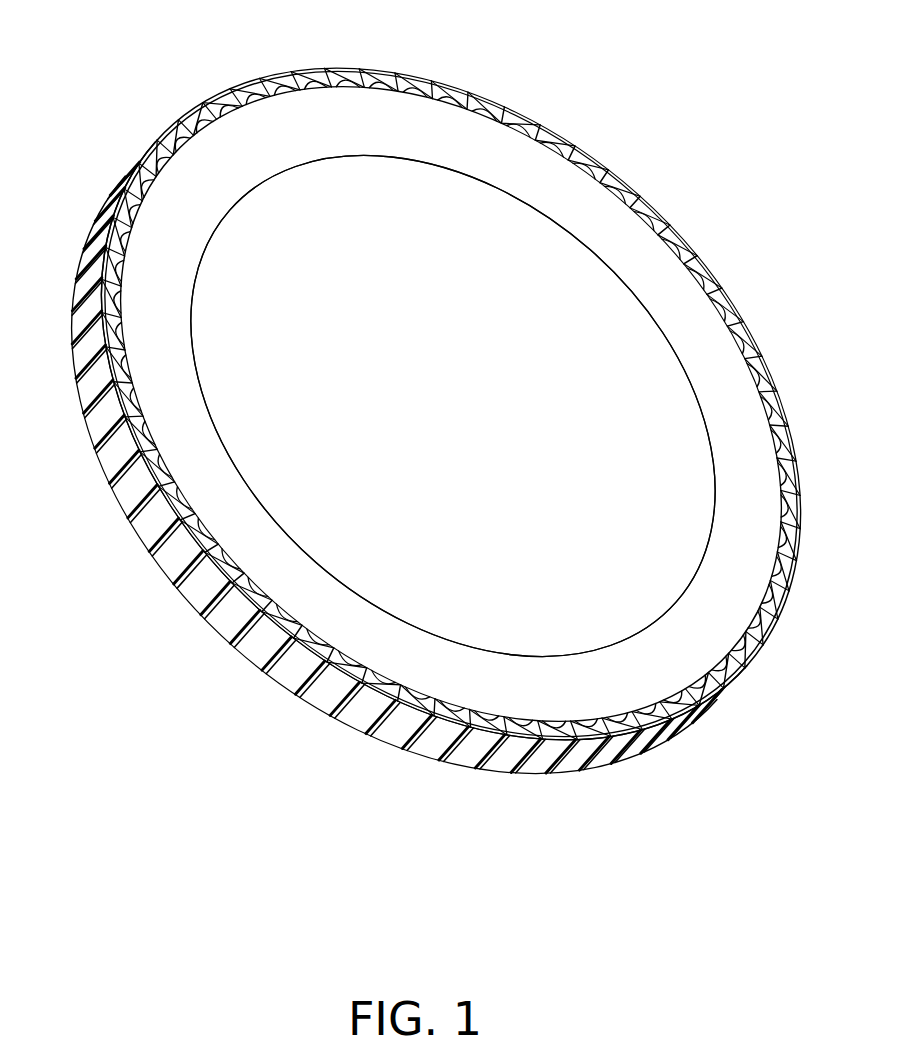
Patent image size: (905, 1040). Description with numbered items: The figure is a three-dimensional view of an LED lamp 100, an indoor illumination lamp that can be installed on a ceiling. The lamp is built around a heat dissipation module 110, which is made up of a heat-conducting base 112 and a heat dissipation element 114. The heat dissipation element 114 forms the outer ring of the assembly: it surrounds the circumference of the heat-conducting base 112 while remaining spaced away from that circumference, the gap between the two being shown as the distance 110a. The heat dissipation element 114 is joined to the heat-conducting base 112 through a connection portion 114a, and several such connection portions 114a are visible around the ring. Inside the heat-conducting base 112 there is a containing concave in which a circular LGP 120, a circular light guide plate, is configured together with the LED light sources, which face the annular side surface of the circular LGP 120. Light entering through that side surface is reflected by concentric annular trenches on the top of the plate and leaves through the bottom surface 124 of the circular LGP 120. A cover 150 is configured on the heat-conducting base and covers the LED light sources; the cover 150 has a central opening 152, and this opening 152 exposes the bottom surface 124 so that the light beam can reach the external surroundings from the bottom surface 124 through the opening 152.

The LED lamp 100 is at (780, 866).
The heat dissipation module 110 is at (286, 800).
The distance 110a is at (229, 566).
The heat-conducting base 112 is at (333, 660).
The heat dissipation element 114 is at (287, 677).
The connection portion 114a is at (293, 633).
The circular LGP 120 is at (520, 613).
The bottom surface 124 is at (577, 368).
The cover 150 is at (556, 180).
The opening 152 is at (366, 158).